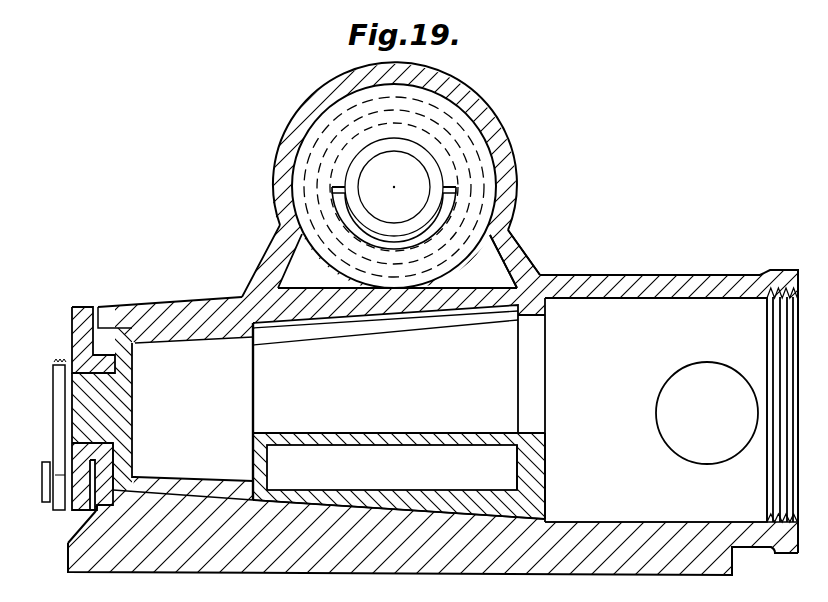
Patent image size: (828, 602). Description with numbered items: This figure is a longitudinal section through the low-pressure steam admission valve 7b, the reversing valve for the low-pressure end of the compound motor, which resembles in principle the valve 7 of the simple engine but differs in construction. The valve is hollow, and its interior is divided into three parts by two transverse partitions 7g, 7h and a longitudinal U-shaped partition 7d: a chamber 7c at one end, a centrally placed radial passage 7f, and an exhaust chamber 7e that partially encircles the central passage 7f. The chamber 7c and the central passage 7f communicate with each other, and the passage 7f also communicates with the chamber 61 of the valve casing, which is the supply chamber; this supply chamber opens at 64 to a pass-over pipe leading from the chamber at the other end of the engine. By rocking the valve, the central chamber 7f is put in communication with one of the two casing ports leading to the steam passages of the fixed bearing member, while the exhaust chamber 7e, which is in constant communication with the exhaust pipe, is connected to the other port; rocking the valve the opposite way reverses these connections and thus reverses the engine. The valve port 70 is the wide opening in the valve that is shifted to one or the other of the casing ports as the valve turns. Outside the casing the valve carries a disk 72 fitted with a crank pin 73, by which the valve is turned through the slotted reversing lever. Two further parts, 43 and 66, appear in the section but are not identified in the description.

The valve 7 is at (208, 332).
The low-pressure valve 7b is at (478, 510).
The end chamber 7c is at (192, 412).
The longitudinal U-shaped partition 7d is at (462, 438).
The exhaust chamber 7e is at (392, 467).
The central radial passage 7f is at (385, 401).
The transverse partition 7g is at (253, 450).
The transverse partition 7h is at (535, 470).
The bearing 43 is at (444, 208).
The supply chamber 61 is at (671, 405).
The supply chamber opening 64 is at (707, 413).
The bracket 66 is at (475, 270).
The valve port 70 is at (367, 323).
The disk 72 is at (70, 316).
The crank pin 73 is at (56, 490).